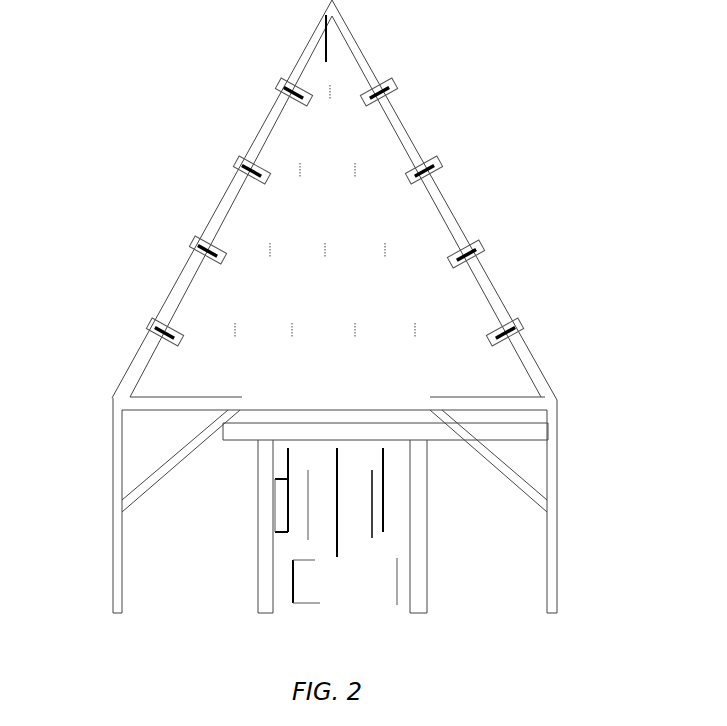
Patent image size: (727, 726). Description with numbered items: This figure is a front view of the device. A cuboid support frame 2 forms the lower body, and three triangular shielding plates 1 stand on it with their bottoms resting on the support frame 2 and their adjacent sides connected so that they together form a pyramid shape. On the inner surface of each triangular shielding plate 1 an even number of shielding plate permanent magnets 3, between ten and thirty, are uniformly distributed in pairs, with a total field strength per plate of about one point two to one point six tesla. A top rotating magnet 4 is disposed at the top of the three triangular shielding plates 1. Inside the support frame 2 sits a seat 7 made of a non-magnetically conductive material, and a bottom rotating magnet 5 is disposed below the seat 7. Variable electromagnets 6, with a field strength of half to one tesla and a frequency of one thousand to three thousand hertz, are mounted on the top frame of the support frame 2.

The triangular shielding plate 1 is at (223, 200).
The support frame 2 is at (113, 492).
The permanent magnet 3 is at (458, 260).
The top rotating magnet 4 is at (335, 37).
The bottom rotating magnet 5 is at (337, 508).
The variable electromagnet 6 is at (322, 398).
The seat 7 is at (400, 433).